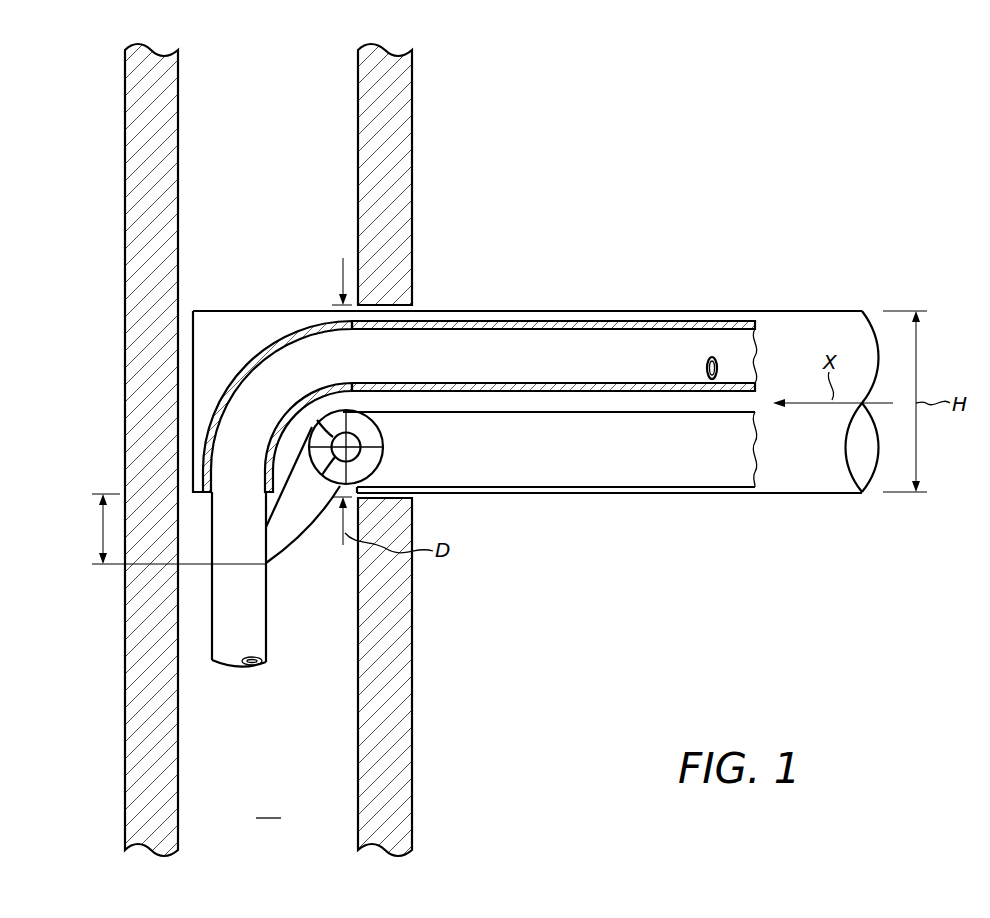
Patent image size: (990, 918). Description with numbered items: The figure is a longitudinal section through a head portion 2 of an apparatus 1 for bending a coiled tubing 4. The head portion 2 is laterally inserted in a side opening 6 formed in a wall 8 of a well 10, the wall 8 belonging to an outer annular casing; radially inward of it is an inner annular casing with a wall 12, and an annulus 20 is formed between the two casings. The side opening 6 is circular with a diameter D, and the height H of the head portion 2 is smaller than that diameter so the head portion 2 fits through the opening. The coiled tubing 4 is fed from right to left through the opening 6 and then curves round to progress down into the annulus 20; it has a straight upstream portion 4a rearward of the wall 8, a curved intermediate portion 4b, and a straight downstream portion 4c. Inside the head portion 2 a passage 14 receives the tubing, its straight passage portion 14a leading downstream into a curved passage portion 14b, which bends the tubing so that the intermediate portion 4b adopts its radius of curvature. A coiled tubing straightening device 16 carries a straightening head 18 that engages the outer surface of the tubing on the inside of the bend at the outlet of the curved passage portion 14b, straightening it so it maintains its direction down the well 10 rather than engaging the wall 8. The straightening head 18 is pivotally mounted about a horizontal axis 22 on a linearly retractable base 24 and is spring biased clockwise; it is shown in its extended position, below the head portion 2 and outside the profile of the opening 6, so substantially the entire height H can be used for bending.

The apparatus 1 is at (719, 284).
The head portion 2 is at (515, 308).
The coiled tubing 4 is at (730, 355).
The upstream portion 4a is at (665, 348).
The intermediate portion 4b is at (278, 372).
The downstream portion 4c is at (256, 638).
The side opening 6 is at (400, 492).
The wall 8 is at (409, 97).
The well 10 is at (432, 719).
The wall 12 is at (128, 97).
The passage 14 is at (455, 337).
The straight passage portion 14a is at (600, 335).
The curved passage portion 14b is at (316, 345).
The coiled tubing straightening device 16 is at (297, 447).
The straightening head 18 is at (290, 549).
The annulus 20 is at (268, 808).
The horizontal axis 22 is at (327, 482).
The base 24 is at (345, 418).